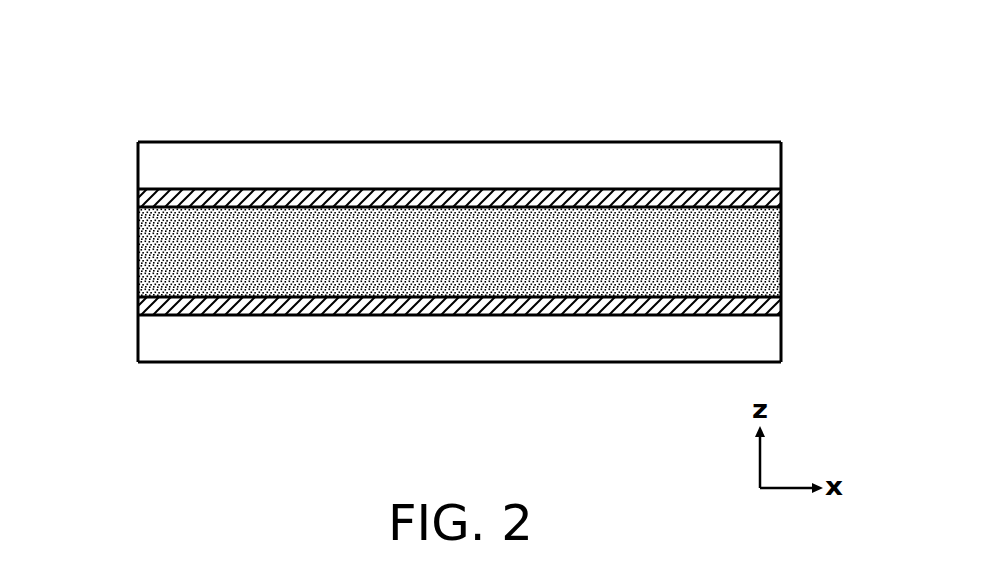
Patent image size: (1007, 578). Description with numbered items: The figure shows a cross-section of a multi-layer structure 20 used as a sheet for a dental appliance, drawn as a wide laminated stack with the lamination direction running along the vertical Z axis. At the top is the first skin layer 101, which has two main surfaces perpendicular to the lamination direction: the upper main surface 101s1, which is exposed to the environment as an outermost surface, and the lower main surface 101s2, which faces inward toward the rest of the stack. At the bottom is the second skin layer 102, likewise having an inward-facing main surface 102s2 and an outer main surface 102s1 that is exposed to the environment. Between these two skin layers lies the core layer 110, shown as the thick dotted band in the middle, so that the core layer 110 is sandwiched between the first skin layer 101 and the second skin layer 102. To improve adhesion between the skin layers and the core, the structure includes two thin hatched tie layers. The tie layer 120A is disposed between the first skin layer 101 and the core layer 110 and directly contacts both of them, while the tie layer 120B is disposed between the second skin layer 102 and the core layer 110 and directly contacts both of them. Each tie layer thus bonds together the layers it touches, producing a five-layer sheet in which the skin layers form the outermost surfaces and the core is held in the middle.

The multi-layer structure 20 is at (448, 237).
The first skin layer 101 is at (503, 125).
The main surface of the first skin layer 101s1 is at (320, 141).
The main surface of the first skin layer 101s2 is at (443, 188).
The second skin layer 102 is at (503, 382).
The main surface of the second skin layer 102s1 is at (323, 363).
The main surface of the second skin layer 102s2 is at (445, 316).
The core layer 110 is at (772, 252).
The tie layer 120A is at (143, 199).
The tie layer 120B is at (143, 308).